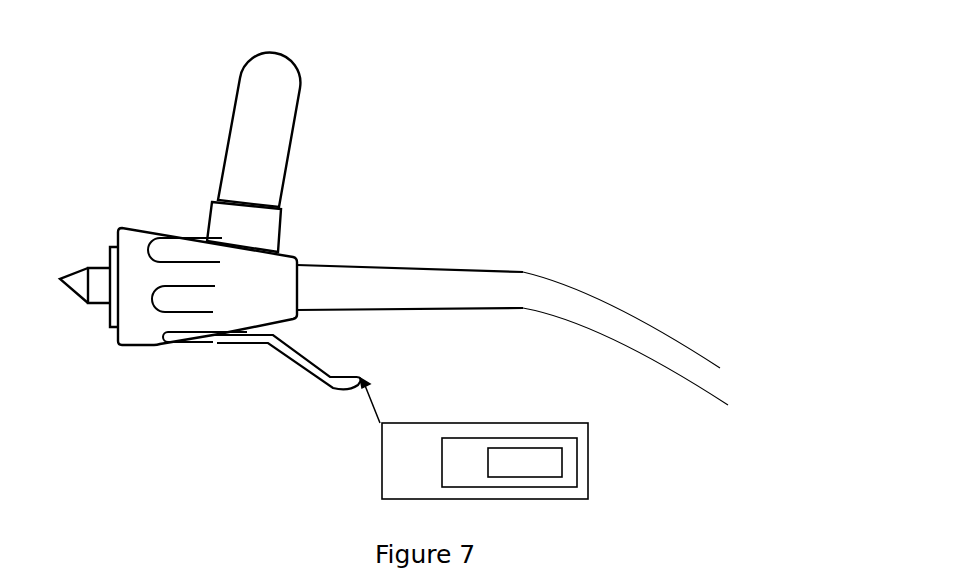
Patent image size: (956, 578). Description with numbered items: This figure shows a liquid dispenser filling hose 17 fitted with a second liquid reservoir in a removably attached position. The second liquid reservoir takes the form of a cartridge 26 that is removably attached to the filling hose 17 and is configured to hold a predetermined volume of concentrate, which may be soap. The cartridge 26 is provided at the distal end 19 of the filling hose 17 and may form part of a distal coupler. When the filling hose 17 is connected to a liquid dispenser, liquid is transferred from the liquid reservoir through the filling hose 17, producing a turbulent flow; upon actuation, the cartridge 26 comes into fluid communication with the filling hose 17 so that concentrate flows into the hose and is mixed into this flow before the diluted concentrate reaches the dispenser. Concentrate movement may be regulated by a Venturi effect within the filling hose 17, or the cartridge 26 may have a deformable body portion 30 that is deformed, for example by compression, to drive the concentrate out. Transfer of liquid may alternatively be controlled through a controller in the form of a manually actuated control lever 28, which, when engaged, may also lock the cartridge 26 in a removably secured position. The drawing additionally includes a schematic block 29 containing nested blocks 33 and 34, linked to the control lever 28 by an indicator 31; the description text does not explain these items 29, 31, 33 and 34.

The filling hose 17 is at (495, 290).
The distal end 19 is at (143, 320).
The cartridge 26 is at (227, 155).
The control lever 28 is at (283, 357).
The controller 29 is at (485, 461).
The deformable body portion 30 is at (263, 128).
The connection 31 is at (378, 408).
The processor 33 is at (509, 462).
The memory 34 is at (525, 462).